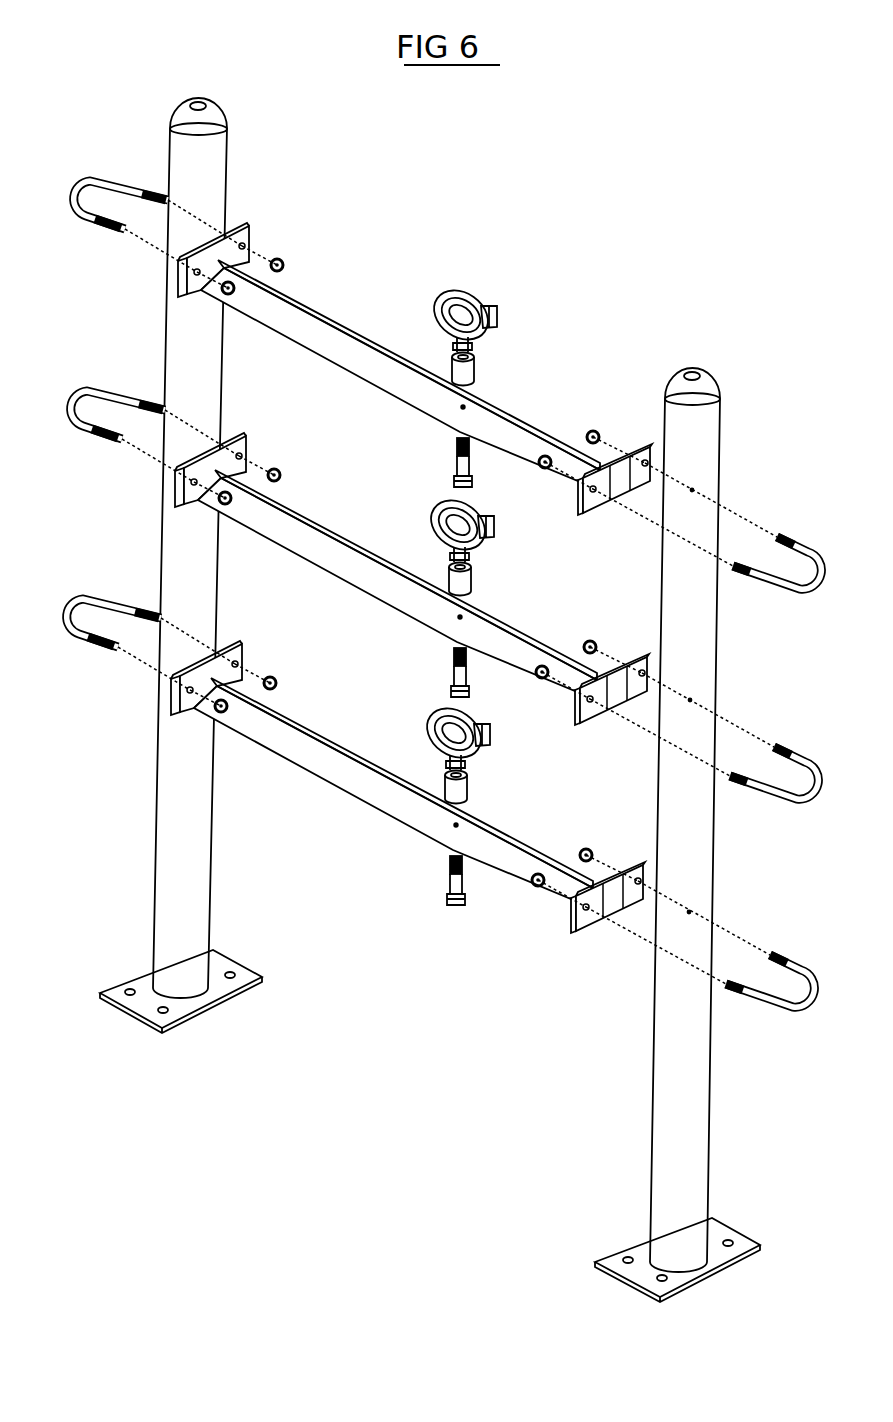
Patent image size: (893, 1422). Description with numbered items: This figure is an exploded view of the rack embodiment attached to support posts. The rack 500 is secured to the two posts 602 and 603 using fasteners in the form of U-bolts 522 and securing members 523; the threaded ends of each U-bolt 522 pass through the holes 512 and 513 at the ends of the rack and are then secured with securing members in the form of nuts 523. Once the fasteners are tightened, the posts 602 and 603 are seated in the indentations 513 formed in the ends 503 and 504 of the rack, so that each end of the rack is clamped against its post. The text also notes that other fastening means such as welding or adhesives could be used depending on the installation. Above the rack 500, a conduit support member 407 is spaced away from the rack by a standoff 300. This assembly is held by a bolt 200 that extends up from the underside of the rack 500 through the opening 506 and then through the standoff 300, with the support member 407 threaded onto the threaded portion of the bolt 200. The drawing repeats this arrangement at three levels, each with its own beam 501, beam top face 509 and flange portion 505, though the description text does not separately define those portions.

The post 603 is at (218, 116).
The post 602 is at (707, 388).
The U-bolt 522 is at (96, 180).
The end 504 is at (221, 236).
The rack 500 is at (397, 579).
The beam 501 is at (343, 352).
The beam top face 509 is at (313, 307).
The beam upper flange portion 505 is at (410, 370).
The opening 506 is at (516, 413).
The holes 513 is at (611, 503).
The end 503 is at (649, 486).
The conduit support member 407 is at (489, 303).
The standoff 300 is at (478, 370).
The bolt 200 is at (456, 471).
The holes 512 is at (256, 238).
The securing member 523 is at (282, 262).